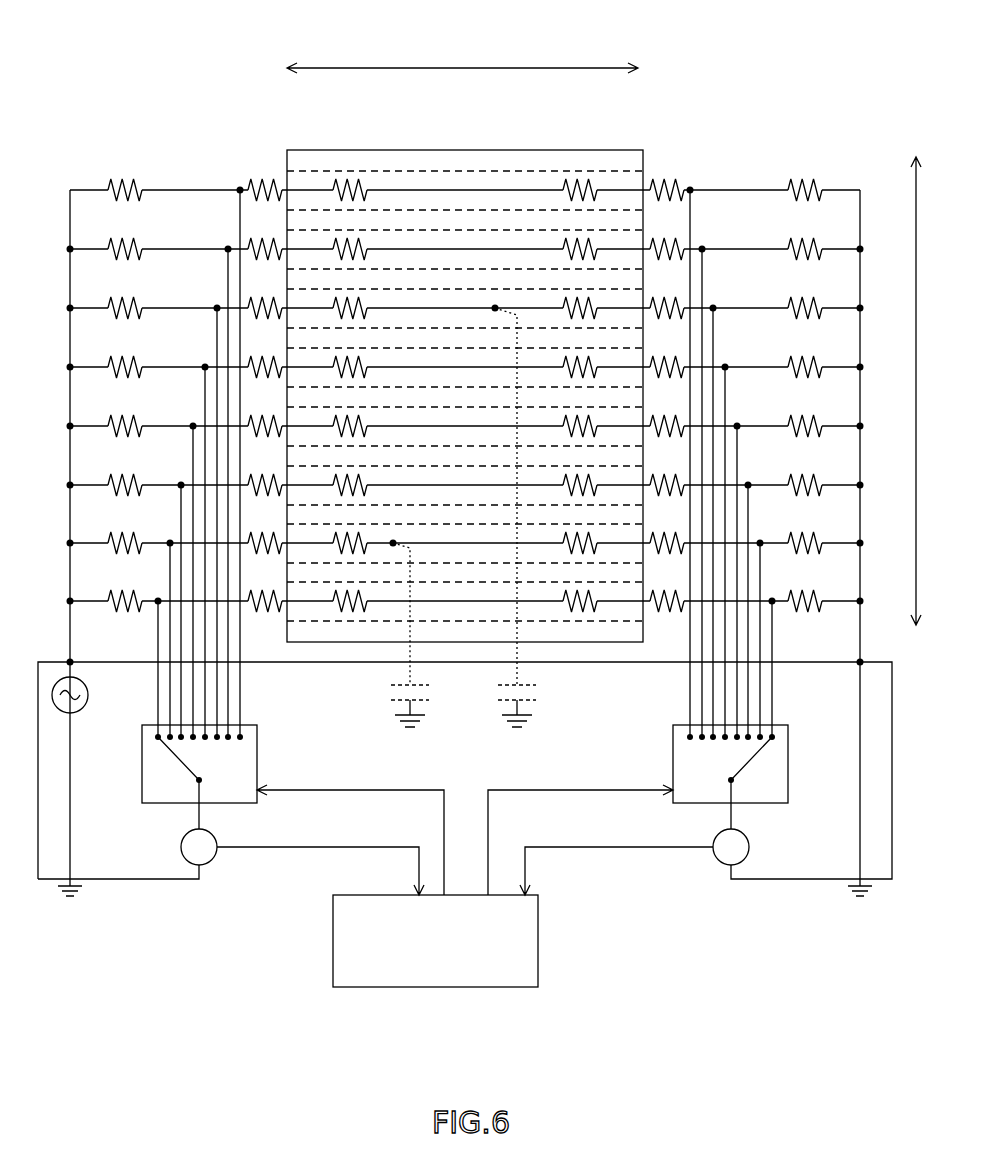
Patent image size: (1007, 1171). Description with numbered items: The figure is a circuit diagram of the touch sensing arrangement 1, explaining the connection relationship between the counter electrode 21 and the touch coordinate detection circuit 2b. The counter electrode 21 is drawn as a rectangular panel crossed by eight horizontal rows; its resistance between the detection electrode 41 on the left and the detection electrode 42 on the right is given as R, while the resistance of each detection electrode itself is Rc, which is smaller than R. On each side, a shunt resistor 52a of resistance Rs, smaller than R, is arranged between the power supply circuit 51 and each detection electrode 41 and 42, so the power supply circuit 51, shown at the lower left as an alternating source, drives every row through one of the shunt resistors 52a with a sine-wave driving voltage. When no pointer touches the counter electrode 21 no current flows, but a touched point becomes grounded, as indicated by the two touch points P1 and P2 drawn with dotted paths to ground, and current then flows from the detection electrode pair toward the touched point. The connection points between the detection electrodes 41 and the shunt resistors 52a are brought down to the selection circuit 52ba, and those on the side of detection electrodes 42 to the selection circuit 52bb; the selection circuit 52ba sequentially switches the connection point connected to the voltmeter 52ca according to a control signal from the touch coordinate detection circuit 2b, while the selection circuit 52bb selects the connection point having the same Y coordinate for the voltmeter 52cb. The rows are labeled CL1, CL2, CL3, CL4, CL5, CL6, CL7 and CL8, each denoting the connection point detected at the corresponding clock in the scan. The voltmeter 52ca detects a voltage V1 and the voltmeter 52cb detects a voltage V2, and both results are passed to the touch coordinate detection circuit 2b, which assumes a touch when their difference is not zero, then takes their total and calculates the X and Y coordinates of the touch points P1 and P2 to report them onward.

The touch panel 1 is at (147, 25).
The counter electrode 21 is at (565, 150).
The detection electrode 41 is at (262, 181).
The detection electrode 42 is at (663, 181).
The resistance value of the counter electrode R is at (420, 190).
The touch point P1 is at (393, 543).
The touch point P2 is at (495, 308).
The shunt resistor 52a is at (120, 178).
The power supply circuit 51 is at (90, 699).
The selection circuit 52ba is at (257, 748).
The selection circuit 52bb is at (788, 743).
The voltmeter 52ca is at (218, 840).
The voltmeter 52cb is at (750, 847).
The touch coordinate detection circuit 2b is at (540, 925).
The connection point detected at the first time (clock 1) CL1 is at (888, 602).
The connection point detected at the second time (clock 2) CL2 is at (888, 544).
The connection point detected at the third time (clock 3) CL3 is at (888, 486).
The connection point detected at the fourth time (clock 4) CL4 is at (888, 427).
The connection point detected at the fifth time (clock 5) CL5 is at (888, 368).
The connection point detected at the sixth time (clock 6) CL6 is at (888, 309).
The connection point detected at the seventh time (clock 7) CL7 is at (888, 250).
The connection point detected at the eighth time (clock 8) CL8 is at (888, 191).